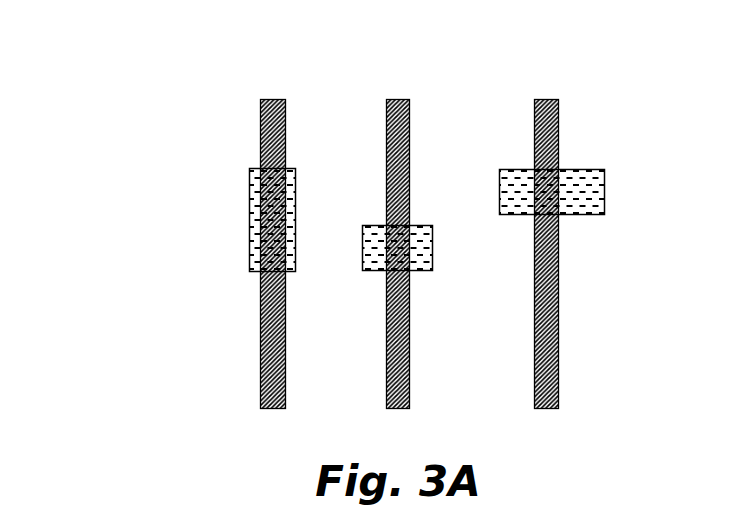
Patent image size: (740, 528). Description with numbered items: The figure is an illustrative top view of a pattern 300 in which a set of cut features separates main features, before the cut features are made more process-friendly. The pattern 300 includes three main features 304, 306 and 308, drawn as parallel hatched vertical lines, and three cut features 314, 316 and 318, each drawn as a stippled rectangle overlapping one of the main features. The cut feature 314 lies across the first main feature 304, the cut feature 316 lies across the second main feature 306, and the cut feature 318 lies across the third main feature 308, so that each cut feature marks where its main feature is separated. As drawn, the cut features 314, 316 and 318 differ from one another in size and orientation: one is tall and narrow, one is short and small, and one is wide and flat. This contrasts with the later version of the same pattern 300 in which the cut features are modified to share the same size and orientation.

The pattern 300 is at (200, 77).
The main feature 304 is at (272, 97).
The main feature 306 is at (398, 97).
The main feature 308 is at (547, 97).
The cut feature 314 is at (299, 217).
The cut feature 316 is at (434, 245).
The cut feature 318 is at (605, 187).